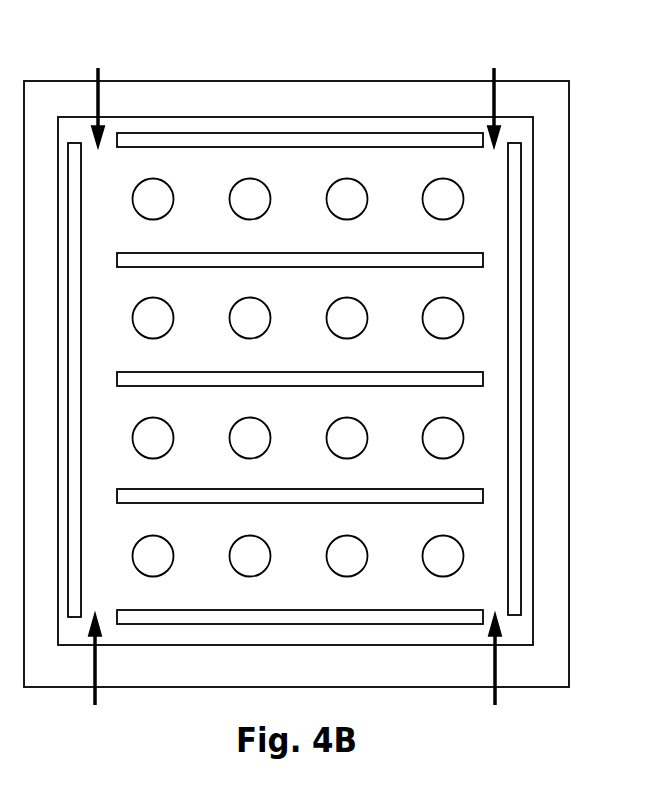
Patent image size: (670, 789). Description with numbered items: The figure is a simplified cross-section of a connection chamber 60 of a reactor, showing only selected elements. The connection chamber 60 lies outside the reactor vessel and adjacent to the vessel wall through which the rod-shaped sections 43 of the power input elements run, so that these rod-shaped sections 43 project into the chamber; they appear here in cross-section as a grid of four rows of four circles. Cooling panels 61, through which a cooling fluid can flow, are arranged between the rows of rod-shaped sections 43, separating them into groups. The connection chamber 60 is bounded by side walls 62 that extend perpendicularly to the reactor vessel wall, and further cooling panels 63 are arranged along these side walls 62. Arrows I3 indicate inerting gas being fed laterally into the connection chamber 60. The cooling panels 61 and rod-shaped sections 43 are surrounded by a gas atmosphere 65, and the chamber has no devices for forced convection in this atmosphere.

The connection chamber 60 is at (107, 58).
The cooling panels 61 is at (175, 143).
The side walls 62 is at (477, 100).
The further cooling panels 63 is at (522, 192).
The gas atmosphere 65 is at (372, 128).
The rod-shaped sections 43 is at (158, 199).
The arrows I3 is at (498, 74).